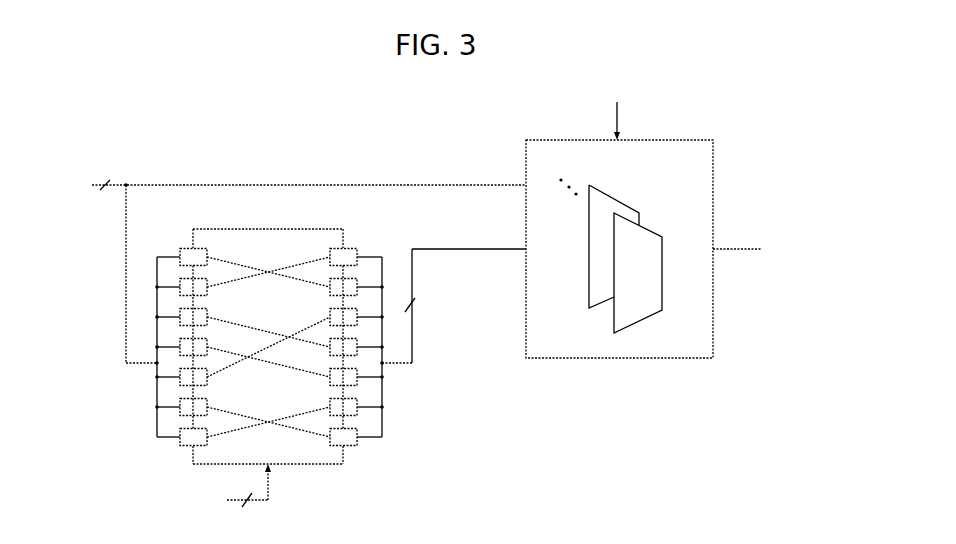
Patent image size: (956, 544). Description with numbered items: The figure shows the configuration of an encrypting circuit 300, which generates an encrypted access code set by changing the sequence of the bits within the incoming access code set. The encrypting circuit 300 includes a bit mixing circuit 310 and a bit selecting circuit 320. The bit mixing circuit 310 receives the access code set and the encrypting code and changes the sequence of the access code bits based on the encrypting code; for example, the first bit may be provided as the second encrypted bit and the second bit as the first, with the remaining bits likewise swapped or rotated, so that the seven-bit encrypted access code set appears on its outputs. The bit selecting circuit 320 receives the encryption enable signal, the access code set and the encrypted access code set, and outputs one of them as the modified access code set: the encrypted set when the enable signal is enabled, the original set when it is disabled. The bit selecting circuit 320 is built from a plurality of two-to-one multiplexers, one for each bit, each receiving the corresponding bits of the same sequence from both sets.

The encrypting circuit 300 is at (165, 117).
The bit mixing circuit 310 is at (343, 218).
The bit selecting circuit 320 is at (713, 130).